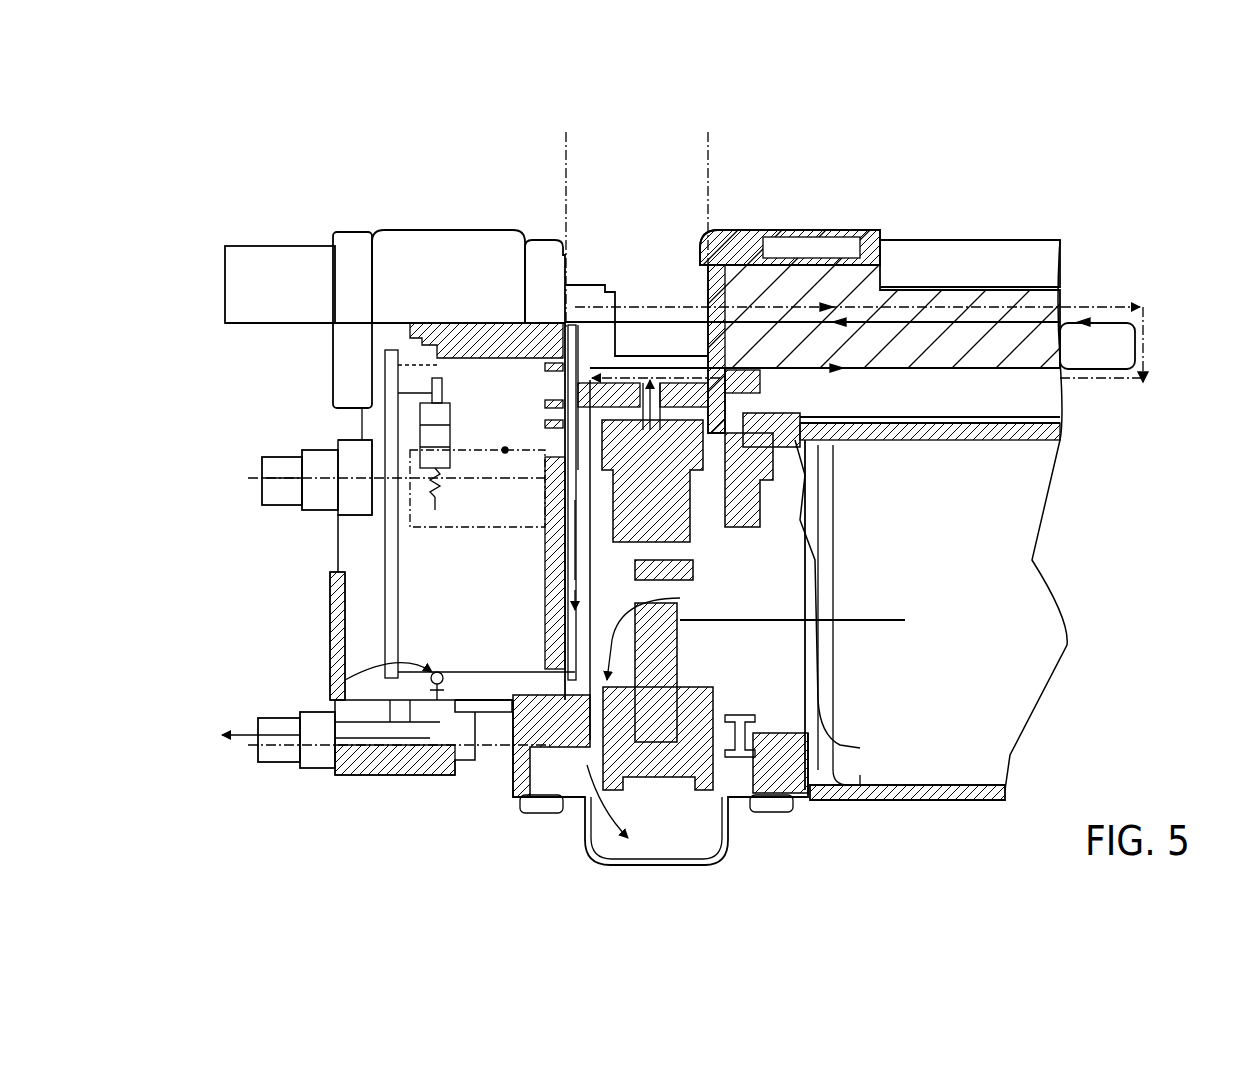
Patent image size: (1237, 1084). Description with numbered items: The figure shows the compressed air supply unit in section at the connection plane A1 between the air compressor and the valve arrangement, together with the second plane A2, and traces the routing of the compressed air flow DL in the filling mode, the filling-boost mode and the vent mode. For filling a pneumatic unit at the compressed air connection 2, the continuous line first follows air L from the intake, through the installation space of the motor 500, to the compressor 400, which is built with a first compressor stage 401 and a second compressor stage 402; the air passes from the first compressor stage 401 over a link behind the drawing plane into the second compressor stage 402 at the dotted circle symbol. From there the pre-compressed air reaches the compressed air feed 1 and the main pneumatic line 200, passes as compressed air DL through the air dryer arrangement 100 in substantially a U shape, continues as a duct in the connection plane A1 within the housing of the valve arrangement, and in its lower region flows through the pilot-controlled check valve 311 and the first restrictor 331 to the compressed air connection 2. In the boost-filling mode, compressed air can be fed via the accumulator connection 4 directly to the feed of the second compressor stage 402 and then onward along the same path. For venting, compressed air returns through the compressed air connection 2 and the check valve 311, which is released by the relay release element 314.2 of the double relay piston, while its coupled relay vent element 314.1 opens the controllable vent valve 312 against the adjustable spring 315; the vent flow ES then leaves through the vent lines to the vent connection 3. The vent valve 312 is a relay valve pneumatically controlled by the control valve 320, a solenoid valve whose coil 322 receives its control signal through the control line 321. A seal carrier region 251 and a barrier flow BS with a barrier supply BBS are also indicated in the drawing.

The compressed air feed 1 is at (660, 393).
The compressed air connection 2 is at (258, 750).
The vent connection 3 is at (505, 450).
The accumulator connection 4 is at (262, 470).
The air dryer arrangement 100 is at (868, 320).
The main pneumatic line 200 is at (598, 302).
The seal carrier 251 is at (435, 338).
The pilot-controlled check valve 311 is at (330, 677).
The controllable vent valve 312 is at (420, 432).
The relay vent element 314.1 is at (430, 398).
The relay release element 314.2 is at (395, 590).
The adjustable spring 315 is at (437, 512).
The control valve 320 is at (452, 250).
The control line 321 is at (302, 305).
The coil 322 is at (449, 289).
The first restrictor 331 is at (420, 765).
The compressor 400 is at (735, 745).
The first compressor stage 401 is at (688, 843).
The second compressor stage 402 is at (660, 480).
The motor 500 is at (961, 714).
The connection plane A1 is at (566, 138).
The second axis A2 is at (708, 138).
The barrier fluid flow BS is at (1078, 322).
The barrier fluid supply BBS is at (282, 460).
The vent flow ES is at (1150, 345).
The compressed air flow DL is at (950, 320).
The air L is at (882, 625).